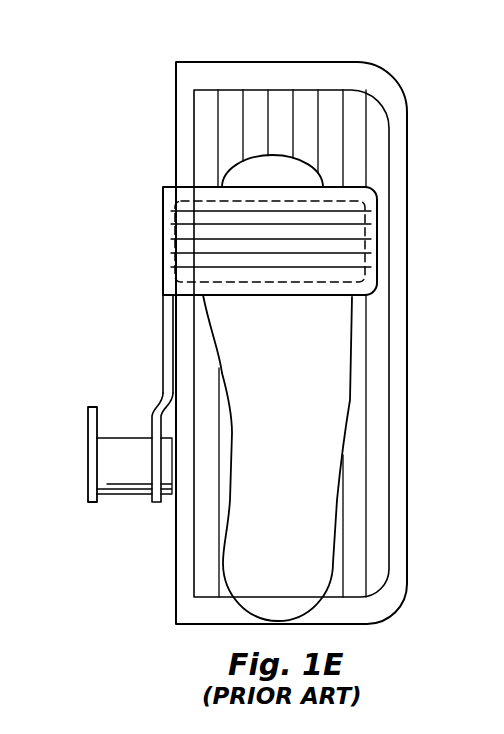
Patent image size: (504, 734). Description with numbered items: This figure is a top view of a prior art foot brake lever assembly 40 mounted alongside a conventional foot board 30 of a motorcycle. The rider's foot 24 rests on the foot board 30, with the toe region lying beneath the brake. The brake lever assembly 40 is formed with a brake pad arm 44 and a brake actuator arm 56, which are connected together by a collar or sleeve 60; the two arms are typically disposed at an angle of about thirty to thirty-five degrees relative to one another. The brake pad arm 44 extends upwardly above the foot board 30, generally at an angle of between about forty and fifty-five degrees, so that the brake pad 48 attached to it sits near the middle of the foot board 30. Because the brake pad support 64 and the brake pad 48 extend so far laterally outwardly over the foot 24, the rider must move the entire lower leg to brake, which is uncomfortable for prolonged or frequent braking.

The foot board 30 is at (387, 91).
The rider's foot 24 is at (296, 450).
The brake pad 48 is at (173, 222).
The brake pad support 64 is at (355, 215).
The brake pad arm 44 is at (163, 358).
The brake lever assembly 40 is at (158, 397).
The brake actuator arm 56 is at (88, 423).
The collar or sleeve 60 is at (111, 478).